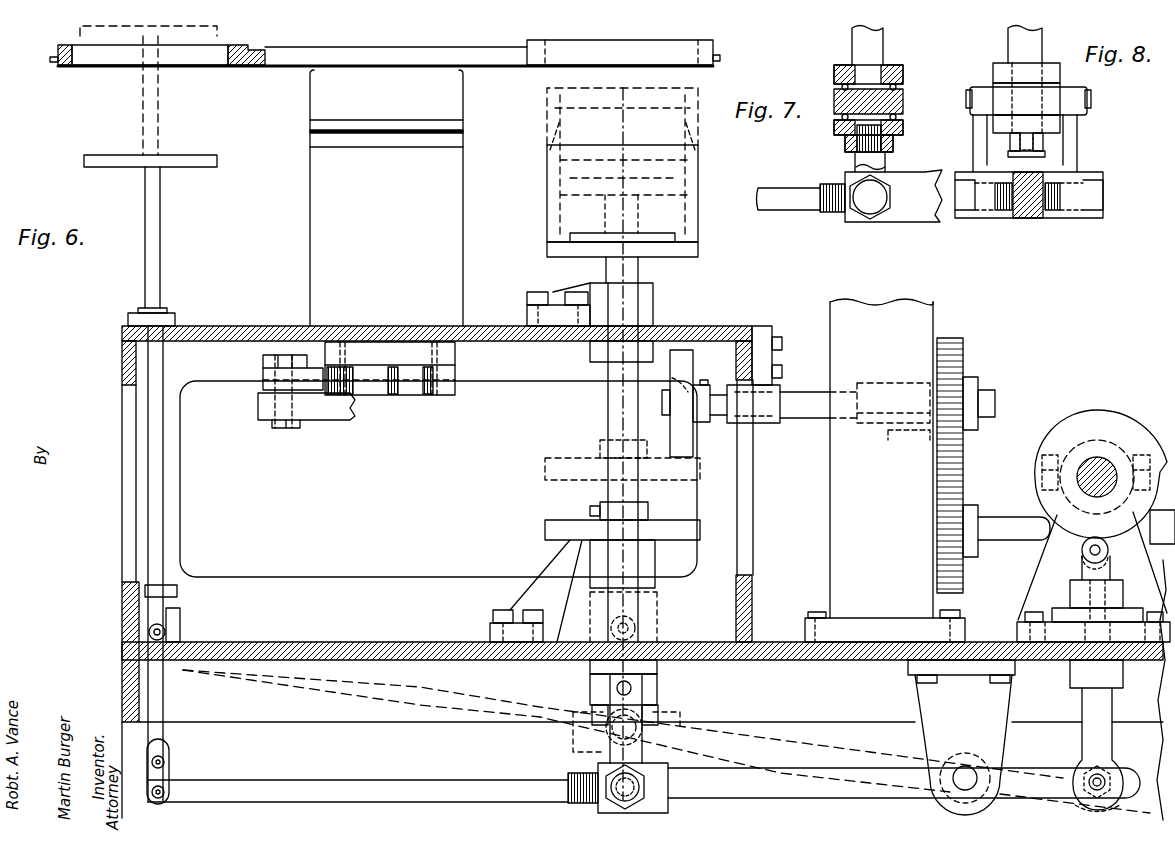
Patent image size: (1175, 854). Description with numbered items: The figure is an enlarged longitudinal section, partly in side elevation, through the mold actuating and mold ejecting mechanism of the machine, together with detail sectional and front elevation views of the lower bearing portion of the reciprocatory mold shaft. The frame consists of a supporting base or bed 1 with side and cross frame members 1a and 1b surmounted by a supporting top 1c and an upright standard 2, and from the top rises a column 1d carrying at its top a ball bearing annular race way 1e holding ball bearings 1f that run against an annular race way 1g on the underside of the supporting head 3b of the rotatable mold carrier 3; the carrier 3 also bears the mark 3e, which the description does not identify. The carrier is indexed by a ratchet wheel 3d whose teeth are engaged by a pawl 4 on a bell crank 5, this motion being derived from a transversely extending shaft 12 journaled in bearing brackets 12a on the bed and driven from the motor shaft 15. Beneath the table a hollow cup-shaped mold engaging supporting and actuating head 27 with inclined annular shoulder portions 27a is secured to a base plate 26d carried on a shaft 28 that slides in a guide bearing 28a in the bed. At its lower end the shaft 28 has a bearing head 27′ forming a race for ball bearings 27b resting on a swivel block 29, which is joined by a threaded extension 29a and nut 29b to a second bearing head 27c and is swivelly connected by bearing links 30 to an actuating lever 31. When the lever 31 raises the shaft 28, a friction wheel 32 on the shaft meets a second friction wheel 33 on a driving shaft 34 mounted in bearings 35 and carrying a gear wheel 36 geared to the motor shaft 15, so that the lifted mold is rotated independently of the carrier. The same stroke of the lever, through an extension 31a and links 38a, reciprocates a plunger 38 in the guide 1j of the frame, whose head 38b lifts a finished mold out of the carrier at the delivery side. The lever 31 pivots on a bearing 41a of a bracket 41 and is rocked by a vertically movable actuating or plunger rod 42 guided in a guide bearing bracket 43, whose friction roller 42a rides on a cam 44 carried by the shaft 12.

In FIG. 6, the supporting base or bed 1 is at (245, 642).
In FIG. 6, the side frame member 1a is at (402, 580).
In FIG. 6, the cross frame member 1b is at (122, 372).
In FIG. 6, the supporting top 1c is at (208, 326).
In FIG. 6, the column 1d is at (464, 248).
In FIG. 6, the ball bearing annular race way 1e is at (463, 143).
In FIG. 6, the ball bearings 1f is at (310, 132).
In FIG. 6, the annular race way 1g is at (460, 124).
In FIG. 6, the guide 1j is at (130, 315).
In FIG. 6, the standard 2 is at (830, 497).
In FIG. 6, the mold carrier 3 is at (395, 58).
In FIG. 6, the supporting head 3b is at (310, 100).
In FIG. 6, the ratchet wheel 3d is at (418, 394).
In FIG. 6, the bar end block 3e is at (722, 57).
In FIG. 6, the pawl 4 is at (263, 372).
In FIG. 6, the bell crank 5 is at (310, 418).
In FIG. 6, the transversely extending shaft 12 is at (1082, 462).
In FIG. 6, the bearing bracket 12a is at (1040, 575).
In FIG. 6, the motor shaft 15 is at (1000, 520).
In FIG. 6, the base plate 26d is at (698, 252).
In FIG. 6, the mold engaging supporting and actuating head 27 is at (700, 228).
In FIG. 6, the inclined annular shoulder portions 27a is at (690, 146).
In FIG. 6, the bearing head 27′ is at (658, 668).
In FIG. 7, the bearing head 27′ is at (906, 70).
In FIG. 8, the bearing head 27′ is at (1026, 73).
In FIG. 6, the ball bearings 27b is at (590, 672).
In FIG. 7, the ball bearings 27b is at (906, 88).
In FIG. 6, the second bearing head 27c is at (658, 708).
In FIG. 7, the second bearing head 27c is at (906, 128).
In FIG. 8, the second bearing head 27c is at (1062, 126).
In FIG. 6, the shaft 28 is at (608, 402).
In FIG. 7, the shaft 28 is at (868, 52).
In FIG. 8, the shaft 28 is at (1020, 38).
In FIG. 6, the guide bearing 28a is at (654, 304).
In FIG. 6, the swivel block 29 is at (658, 694).
In FIG. 7, the swivel block 29 is at (906, 106).
In FIG. 8, the swivel block 29 is at (1065, 98).
In FIG. 7, the threaded extension 29a is at (857, 150).
In FIG. 8, the threaded extension 29a is at (1068, 162).
In FIG. 7, the nut 29b is at (845, 142).
In FIG. 8, the nut 29b is at (1008, 150).
In FIG. 6, the bearing links 30 is at (642, 752).
In FIG. 7, the bearing links 30 is at (878, 168).
In FIG. 8, the bearing links 30 is at (1080, 150).
In FIG. 6, the actuating lever 31 is at (756, 798).
In FIG. 7, the actuating lever 31 is at (932, 215).
In FIG. 8, the actuating lever 31 is at (1025, 218).
In FIG. 6, the extension 31a is at (446, 782).
In FIG. 7, the extension 31a is at (782, 193).
In FIG. 6, the friction wheel 32 is at (565, 520).
In FIG. 6, the second friction wheel 33 is at (690, 446).
In FIG. 6, the driving shaft 34 is at (812, 418).
In FIG. 6, the bearings 35 is at (770, 423).
In FIG. 6, the gear wheel 36 is at (955, 338).
In FIG. 6, the plunger 38 is at (162, 256).
In FIG. 6, the links 38a is at (170, 768).
In FIG. 6, the head 38b is at (205, 160).
In FIG. 6, the bracket 41 is at (912, 697).
In FIG. 6, the bearing 41a is at (958, 782).
In FIG. 6, the actuating or plunger rod 42 is at (1082, 702).
In FIG. 6, the friction roller 42a is at (1082, 548).
In FIG. 6, the guide bearing bracket 43 is at (1112, 672).
In FIG. 6, the cam 44 is at (1060, 410).